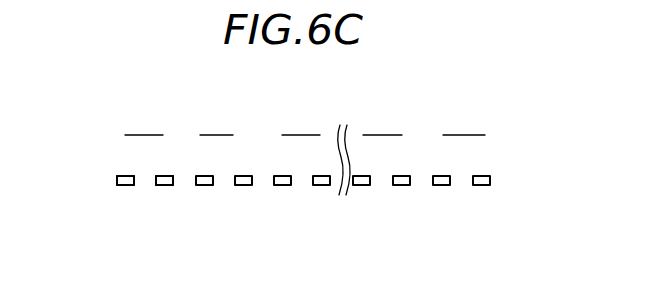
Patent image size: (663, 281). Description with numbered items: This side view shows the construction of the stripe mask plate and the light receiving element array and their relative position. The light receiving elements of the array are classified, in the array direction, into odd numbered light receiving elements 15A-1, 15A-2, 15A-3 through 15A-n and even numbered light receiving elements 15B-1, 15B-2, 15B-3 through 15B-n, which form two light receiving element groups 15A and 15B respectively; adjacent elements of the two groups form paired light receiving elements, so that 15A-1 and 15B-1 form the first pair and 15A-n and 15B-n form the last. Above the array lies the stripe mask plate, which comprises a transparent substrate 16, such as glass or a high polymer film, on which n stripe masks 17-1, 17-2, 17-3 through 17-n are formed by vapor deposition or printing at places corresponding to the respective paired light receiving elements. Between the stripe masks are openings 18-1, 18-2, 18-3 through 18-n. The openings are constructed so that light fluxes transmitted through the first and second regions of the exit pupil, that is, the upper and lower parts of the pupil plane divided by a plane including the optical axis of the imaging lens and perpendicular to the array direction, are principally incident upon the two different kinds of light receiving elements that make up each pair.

The light receiving element group 15A is at (111, 170).
The light receiving element group 15B is at (170, 170).
The odd numbered light receiving element 15A-1 is at (125, 185).
The even numbered light receiving element 15B-1 is at (164, 185).
The odd numbered light receiving element 15A-2 is at (204, 185).
The even numbered light receiving element 15B-2 is at (243, 185).
The odd numbered light receiving element 15A-3 is at (282, 185).
The even numbered light receiving element 15B-3 is at (321, 185).
The odd numbered light receiving element 15A-n is at (441, 185).
The even numbered light receiving element 15B-n is at (481, 185).
The transparent substrate 16 is at (478, 170).
The stripe mask 17-1 is at (145, 135).
The stripe mask 17-2 is at (220, 135).
The stripe mask 17-3 is at (308, 135).
The stripe mask 17-n is at (472, 135).
The opening 18-1 is at (117, 130).
The opening 18-2 is at (182, 130).
The opening 18-3 is at (260, 130).
The opening 18-n is at (420, 130).